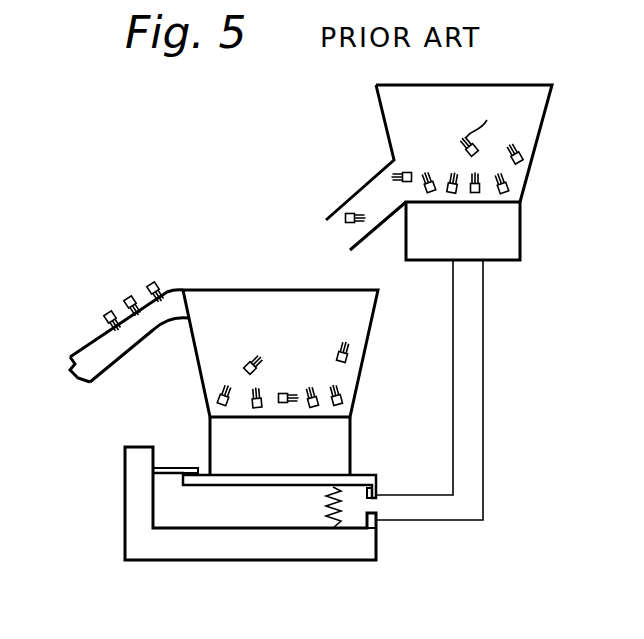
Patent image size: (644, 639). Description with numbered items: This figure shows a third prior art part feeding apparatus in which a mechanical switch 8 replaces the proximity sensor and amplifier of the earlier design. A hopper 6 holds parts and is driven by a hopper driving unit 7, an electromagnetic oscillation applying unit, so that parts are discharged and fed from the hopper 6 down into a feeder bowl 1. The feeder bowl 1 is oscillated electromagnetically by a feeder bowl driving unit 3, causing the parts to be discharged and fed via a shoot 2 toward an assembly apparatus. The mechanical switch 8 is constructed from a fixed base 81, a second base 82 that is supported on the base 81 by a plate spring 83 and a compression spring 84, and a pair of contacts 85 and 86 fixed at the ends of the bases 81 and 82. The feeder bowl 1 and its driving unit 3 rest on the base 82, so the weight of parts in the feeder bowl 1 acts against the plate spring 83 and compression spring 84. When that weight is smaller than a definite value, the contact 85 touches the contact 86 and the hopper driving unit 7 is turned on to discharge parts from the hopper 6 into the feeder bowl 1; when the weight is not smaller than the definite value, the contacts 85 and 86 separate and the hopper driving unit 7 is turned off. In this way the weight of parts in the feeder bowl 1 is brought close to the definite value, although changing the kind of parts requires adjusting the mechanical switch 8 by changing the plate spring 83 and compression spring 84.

The feeder bowl 1 is at (253, 303).
The shoot 2 is at (93, 350).
The feeder bowl driving unit 3 is at (352, 430).
The hopper 6 is at (533, 117).
The hopper driving unit 7 is at (520, 224).
The mechanical switch 8 is at (248, 497).
The base 81 is at (257, 547).
The base 82 is at (365, 472).
The plate spring 83 is at (176, 465).
The compression spring 84 is at (323, 505).
The contact 85 is at (377, 497).
The contact 86 is at (377, 517).